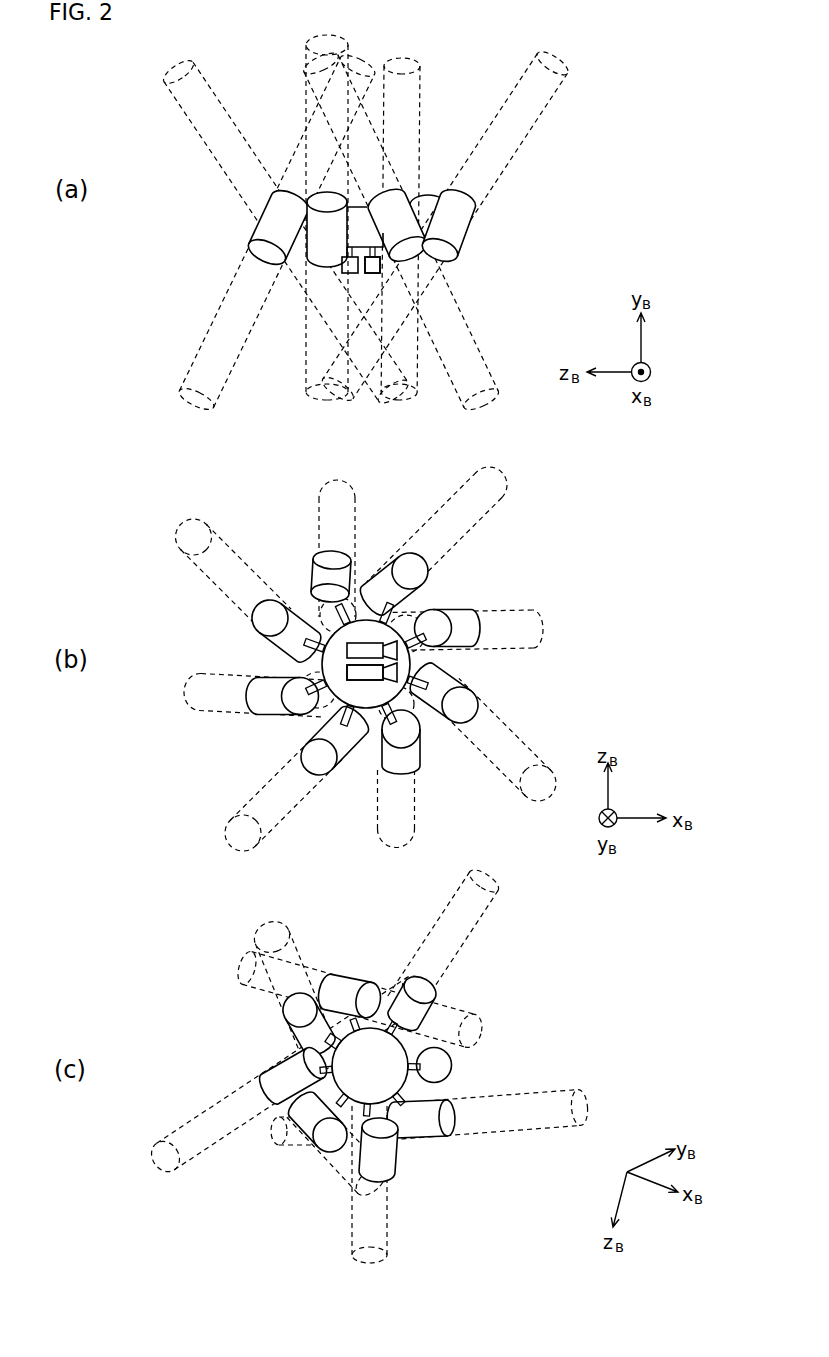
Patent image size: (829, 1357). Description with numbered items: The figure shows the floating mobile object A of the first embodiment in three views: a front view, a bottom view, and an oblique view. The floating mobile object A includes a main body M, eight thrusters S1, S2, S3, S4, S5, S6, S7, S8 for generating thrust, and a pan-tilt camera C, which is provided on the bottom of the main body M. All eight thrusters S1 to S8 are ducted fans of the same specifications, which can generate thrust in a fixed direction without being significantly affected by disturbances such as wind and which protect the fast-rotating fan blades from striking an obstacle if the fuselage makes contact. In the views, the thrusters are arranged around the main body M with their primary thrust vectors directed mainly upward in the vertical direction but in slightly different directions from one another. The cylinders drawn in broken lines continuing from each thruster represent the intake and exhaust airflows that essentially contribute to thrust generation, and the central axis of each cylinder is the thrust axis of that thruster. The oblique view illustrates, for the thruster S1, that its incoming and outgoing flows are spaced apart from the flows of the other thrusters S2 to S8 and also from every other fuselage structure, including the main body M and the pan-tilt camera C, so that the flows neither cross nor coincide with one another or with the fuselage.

The floating mobile object A is at (156, 908).
The main body M is at (369, 1078).
The pan-tilt camera C is at (368, 673).
The thruster S1 is at (445, 1068).
The thruster S2 is at (412, 750).
The thruster S3 is at (322, 760).
The thruster S4 is at (274, 708).
The thruster S5 is at (285, 1078).
The thruster S6 is at (322, 572).
The thruster S7 is at (383, 1155).
The thruster S8 is at (457, 618).